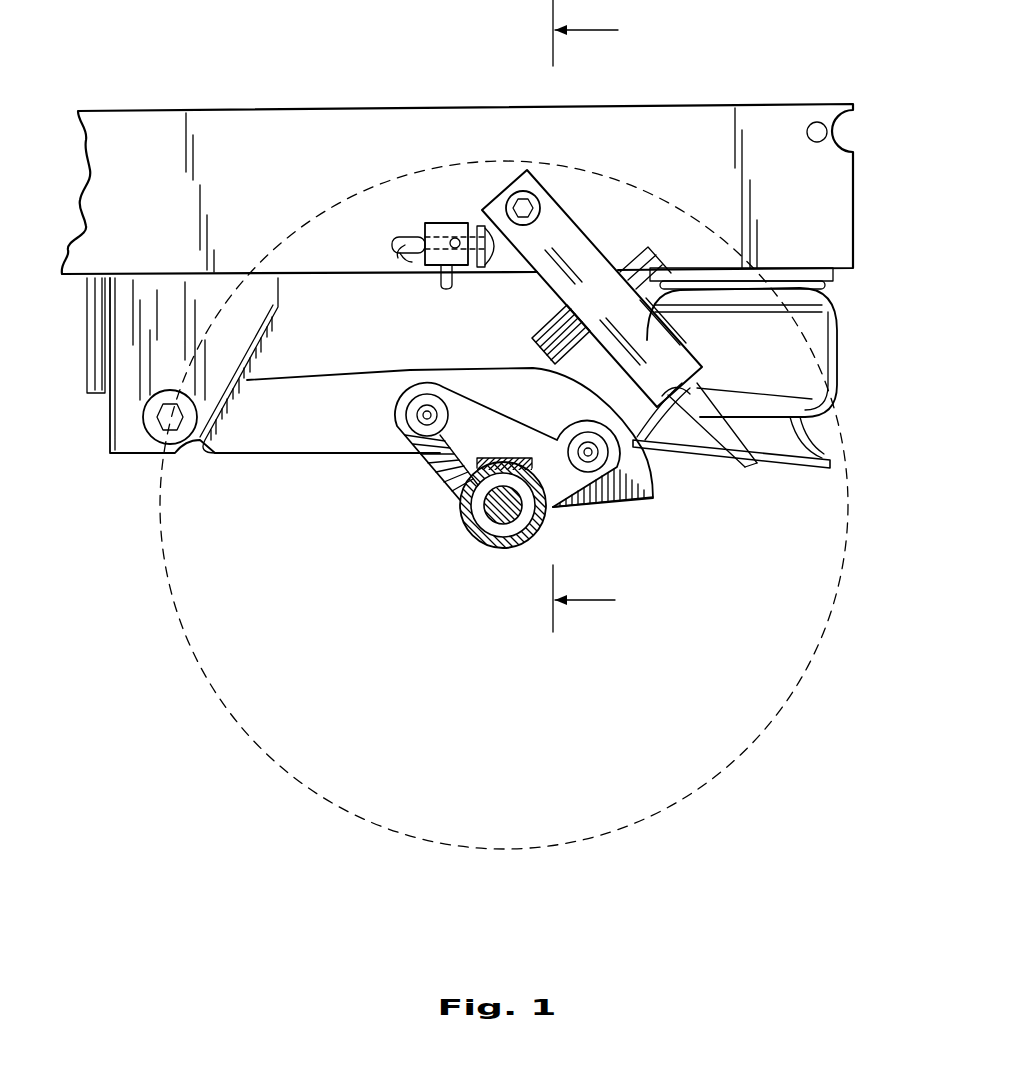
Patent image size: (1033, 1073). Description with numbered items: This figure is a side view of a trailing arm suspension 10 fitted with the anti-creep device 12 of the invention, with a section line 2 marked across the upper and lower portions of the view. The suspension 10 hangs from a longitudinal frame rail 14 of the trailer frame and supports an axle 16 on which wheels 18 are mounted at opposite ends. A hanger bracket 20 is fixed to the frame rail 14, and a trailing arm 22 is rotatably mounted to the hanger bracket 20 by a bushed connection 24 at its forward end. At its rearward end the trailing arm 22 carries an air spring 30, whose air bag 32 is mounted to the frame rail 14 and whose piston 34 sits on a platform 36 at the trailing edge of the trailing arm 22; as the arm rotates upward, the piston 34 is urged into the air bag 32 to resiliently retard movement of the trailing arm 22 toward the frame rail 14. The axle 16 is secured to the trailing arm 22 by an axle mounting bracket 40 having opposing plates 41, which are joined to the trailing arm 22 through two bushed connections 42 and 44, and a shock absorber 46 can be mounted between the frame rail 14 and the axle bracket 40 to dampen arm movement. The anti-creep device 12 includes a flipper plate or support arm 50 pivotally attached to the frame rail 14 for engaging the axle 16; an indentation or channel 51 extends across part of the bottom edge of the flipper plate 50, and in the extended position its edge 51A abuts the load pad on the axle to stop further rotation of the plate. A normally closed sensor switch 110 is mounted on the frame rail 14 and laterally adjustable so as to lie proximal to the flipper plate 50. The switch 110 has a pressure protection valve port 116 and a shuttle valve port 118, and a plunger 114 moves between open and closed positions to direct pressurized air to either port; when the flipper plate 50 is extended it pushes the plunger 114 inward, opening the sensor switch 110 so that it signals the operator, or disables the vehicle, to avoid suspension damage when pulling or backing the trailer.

The section line 2- 2 is at (585, 316).
The trailing arm suspension 10 is at (679, 548).
The anti-creep device 12 is at (617, 221).
The frame rail 14 is at (765, 104).
The axle 16 is at (490, 552).
The wheels 18 is at (168, 600).
The hanger bracket 20 is at (142, 457).
The trailing arm 22 is at (327, 457).
The bushed connection 24 is at (160, 405).
The air spring 30 is at (843, 350).
The air bag 32 is at (838, 326).
The piston 34 is at (820, 453).
The platform 36 is at (813, 470).
The axle mounting bracket 40 is at (437, 515).
The opposing plates 41 is at (560, 507).
The bushed connection 42 is at (420, 385).
The bushed connection 44 is at (595, 427).
The shock absorber 46 is at (527, 337).
The flipper plate 50 is at (583, 277).
The indentation 51 is at (680, 383).
The edge 51A is at (760, 466).
The sensor switch 110 is at (423, 223).
The plunger 114 is at (484, 268).
The pressure protection valve port 116 is at (415, 237).
The shuttle valve port 118 is at (438, 282).